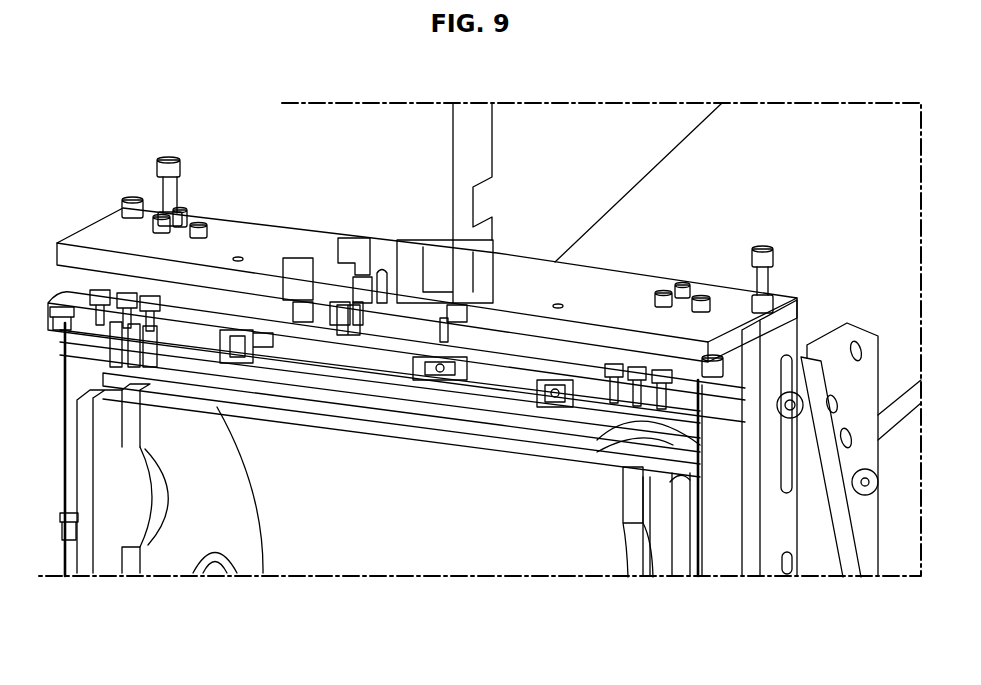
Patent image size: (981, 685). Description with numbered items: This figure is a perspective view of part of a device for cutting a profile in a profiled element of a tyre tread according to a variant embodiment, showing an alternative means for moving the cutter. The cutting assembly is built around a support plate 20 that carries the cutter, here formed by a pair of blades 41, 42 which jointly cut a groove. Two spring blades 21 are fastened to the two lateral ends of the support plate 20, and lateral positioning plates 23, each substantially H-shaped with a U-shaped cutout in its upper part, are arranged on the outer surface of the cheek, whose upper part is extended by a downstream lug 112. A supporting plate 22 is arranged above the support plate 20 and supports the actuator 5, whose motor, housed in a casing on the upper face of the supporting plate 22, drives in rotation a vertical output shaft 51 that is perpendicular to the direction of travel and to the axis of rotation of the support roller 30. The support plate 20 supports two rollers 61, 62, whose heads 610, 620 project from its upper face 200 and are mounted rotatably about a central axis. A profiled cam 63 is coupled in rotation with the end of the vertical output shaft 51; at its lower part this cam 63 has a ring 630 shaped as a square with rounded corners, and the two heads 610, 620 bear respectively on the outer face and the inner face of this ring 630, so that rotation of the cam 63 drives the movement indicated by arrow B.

The actuator 5 is at (356, 138).
The vertical output shaft 51 is at (383, 263).
The profiled cam 63 is at (358, 273).
The head of roller 620 is at (341, 318).
The head of roller 610 is at (307, 312).
The roller 61 is at (307, 338).
The support plate 20 is at (221, 317).
The supporting plate 22 is at (631, 292).
The upper face 200 is at (690, 355).
The downstream lug 112 is at (857, 394).
The roller 62 is at (350, 342).
The ring 630 is at (440, 331).
The support roller 30 is at (383, 422).
The direction B is at (447, 412).
The blade 41 is at (431, 382).
The blade 42 is at (551, 398).
The spring blade 21 is at (725, 524).
The lateral positioning plate 23 is at (783, 525).